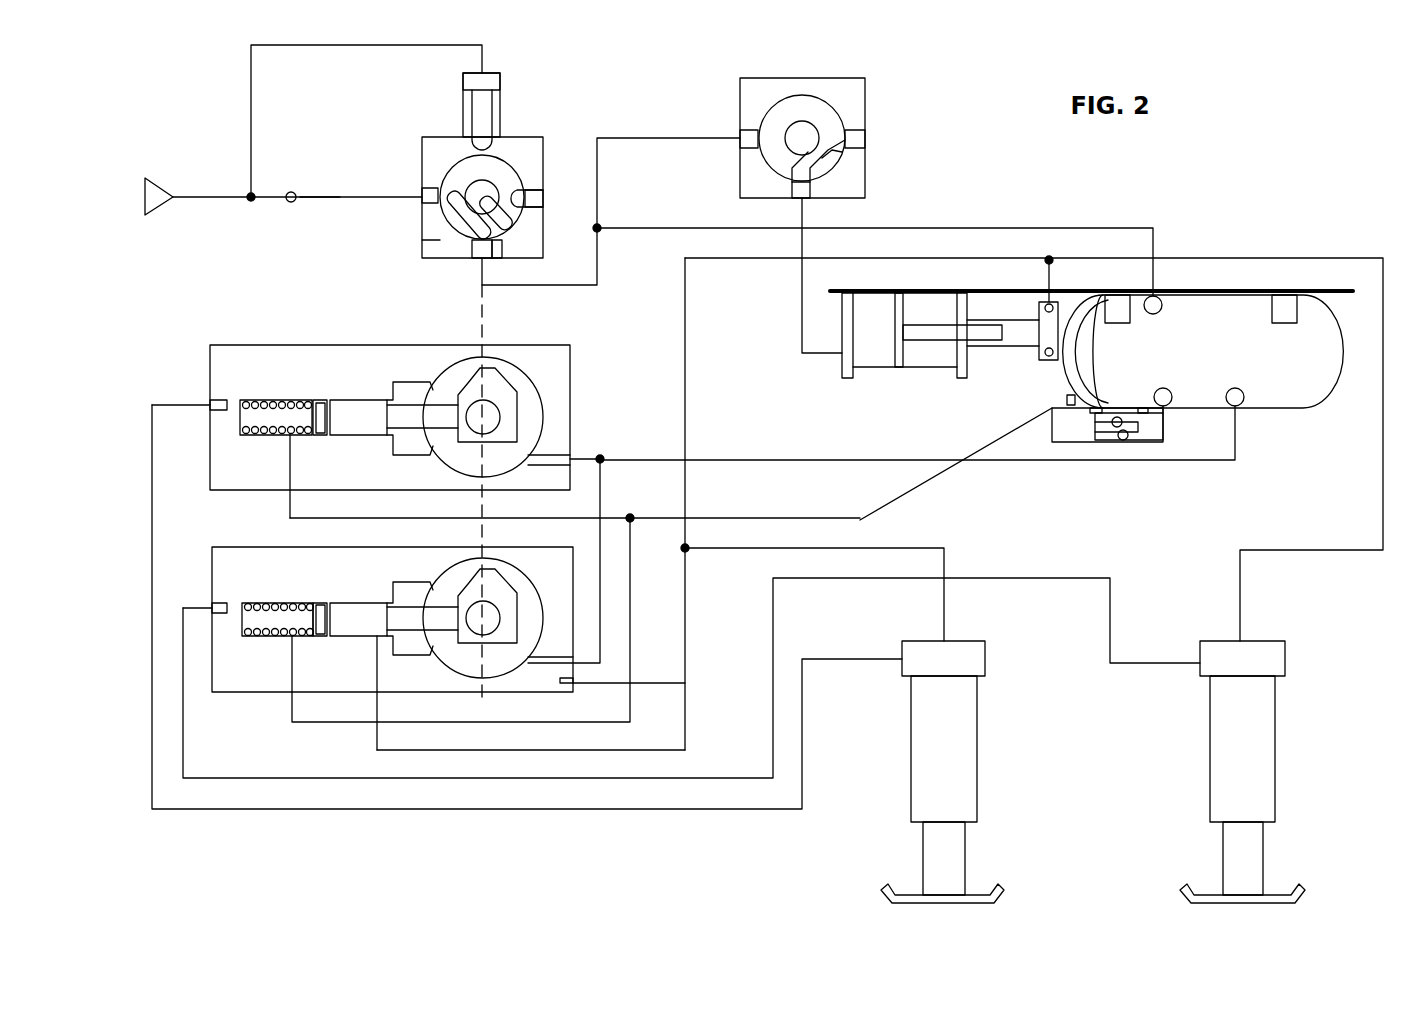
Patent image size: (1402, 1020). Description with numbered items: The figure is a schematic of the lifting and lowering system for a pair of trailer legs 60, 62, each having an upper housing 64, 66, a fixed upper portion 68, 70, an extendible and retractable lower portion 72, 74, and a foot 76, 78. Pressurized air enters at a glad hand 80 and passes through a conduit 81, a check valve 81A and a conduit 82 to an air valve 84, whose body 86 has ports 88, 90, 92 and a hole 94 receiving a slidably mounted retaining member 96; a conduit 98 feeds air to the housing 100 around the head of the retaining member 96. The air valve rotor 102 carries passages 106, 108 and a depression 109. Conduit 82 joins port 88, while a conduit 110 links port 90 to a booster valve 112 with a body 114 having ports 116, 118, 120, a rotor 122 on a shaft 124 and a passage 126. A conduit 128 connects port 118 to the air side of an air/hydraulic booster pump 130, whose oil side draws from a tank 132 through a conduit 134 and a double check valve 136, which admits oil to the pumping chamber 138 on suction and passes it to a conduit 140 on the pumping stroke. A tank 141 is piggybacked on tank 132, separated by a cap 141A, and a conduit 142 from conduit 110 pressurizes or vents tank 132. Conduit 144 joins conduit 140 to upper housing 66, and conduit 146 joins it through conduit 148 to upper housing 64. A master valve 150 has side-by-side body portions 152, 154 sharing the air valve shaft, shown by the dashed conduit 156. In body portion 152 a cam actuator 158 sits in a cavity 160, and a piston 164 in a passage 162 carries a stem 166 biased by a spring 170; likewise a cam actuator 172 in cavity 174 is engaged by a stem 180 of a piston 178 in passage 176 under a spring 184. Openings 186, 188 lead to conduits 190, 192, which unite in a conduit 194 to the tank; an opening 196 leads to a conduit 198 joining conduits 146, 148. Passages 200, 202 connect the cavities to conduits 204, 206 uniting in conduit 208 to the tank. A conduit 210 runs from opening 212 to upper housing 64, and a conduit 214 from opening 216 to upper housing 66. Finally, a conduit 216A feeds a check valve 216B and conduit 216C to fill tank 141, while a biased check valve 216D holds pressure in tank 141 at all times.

The leg 60 is at (977, 767).
The leg 62 is at (1266, 769).
The upper housing 64 is at (998, 654).
The upper housing 66 is at (1298, 655).
The fixed upper portion 68 is at (990, 730).
The fixed upper portion 70 is at (1290, 728).
The extendible and retractable lower portion 72 is at (982, 850).
The extendible and retractable lower portion 74 is at (1280, 845).
The foot 76 is at (993, 893).
The foot 78 is at (1291, 890).
The glad hand 80 is at (148, 178).
The conduit 81 is at (181, 196).
The check valve 81A is at (291, 203).
The conduit 82 is at (320, 197).
The air valve 84 is at (470, 169).
The body 86 is at (422, 240).
The port 88 is at (430, 205).
The port 90 is at (478, 256).
The port 92 is at (543, 198).
The hole 94 is at (424, 148).
The retaining member 96 is at (463, 108).
The conduit 98 is at (297, 50).
The housing 100 is at (505, 85).
The rotor 102 is at (500, 172).
The passage 106 is at (500, 250).
The passage 108 is at (515, 212).
The depression 109 is at (535, 190).
The conduit 110 is at (600, 280).
The booster valve 112 is at (812, 134).
The body 114 is at (815, 78).
The port 116 is at (745, 142).
The port 118 is at (808, 192).
The port 120 is at (862, 142).
The rotor 122 is at (838, 118).
The shaft 124 is at (790, 124).
The passage 126 is at (830, 158).
The conduit 128 is at (800, 342).
The air/hydraulic booster pump 130 is at (940, 357).
The tank 132 is at (1213, 369).
The conduit 134 is at (1066, 399).
The double check valve 136 is at (1038, 358).
The pumping chamber 138 is at (1005, 342).
The conduit 140 is at (1056, 270).
The tank 141 is at (1080, 355).
The cap 141A is at (1095, 385).
The conduit 142 is at (975, 228).
The conduit 144 is at (1232, 258).
The conduit 146 is at (890, 258).
The conduit 148 is at (890, 548).
The master valve 150 is at (200, 326).
The body portion 152 is at (256, 345).
The body portion 154 is at (233, 547).
The dashed conduit 156 is at (496, 332).
The cam actuator 158 is at (513, 392).
The cavity 160 is at (540, 418).
The passage 162 is at (266, 400).
The piston 164 is at (348, 404).
The stem 166 is at (413, 403).
The spring 170 is at (262, 432).
The cam actuator 172 is at (507, 575).
The cavity 174 is at (512, 582).
The passage 176 is at (268, 604).
The piston 178 is at (345, 602).
The stem 180 is at (413, 603).
The spring 184 is at (262, 634).
The opening 186 is at (293, 466).
The opening 188 is at (295, 665).
The conduit 190 is at (350, 518).
The conduit 192 is at (322, 722).
The conduit 194 is at (745, 518).
The opening 196 is at (380, 674).
The conduit 198 is at (410, 750).
The passage 200 is at (583, 457).
The passage 202 is at (574, 683).
The conduit 204 is at (572, 470).
The conduit 206 is at (602, 580).
The conduit 208 is at (787, 458).
The conduit 210 is at (158, 530).
The opening 212 is at (212, 400).
The conduit 214 is at (305, 778).
The opening 216 is at (216, 603).
The conduit 216A is at (1165, 428).
The check valve 216B is at (1113, 428).
The conduit 216C is at (1097, 428).
The check valve 216D is at (1127, 441).